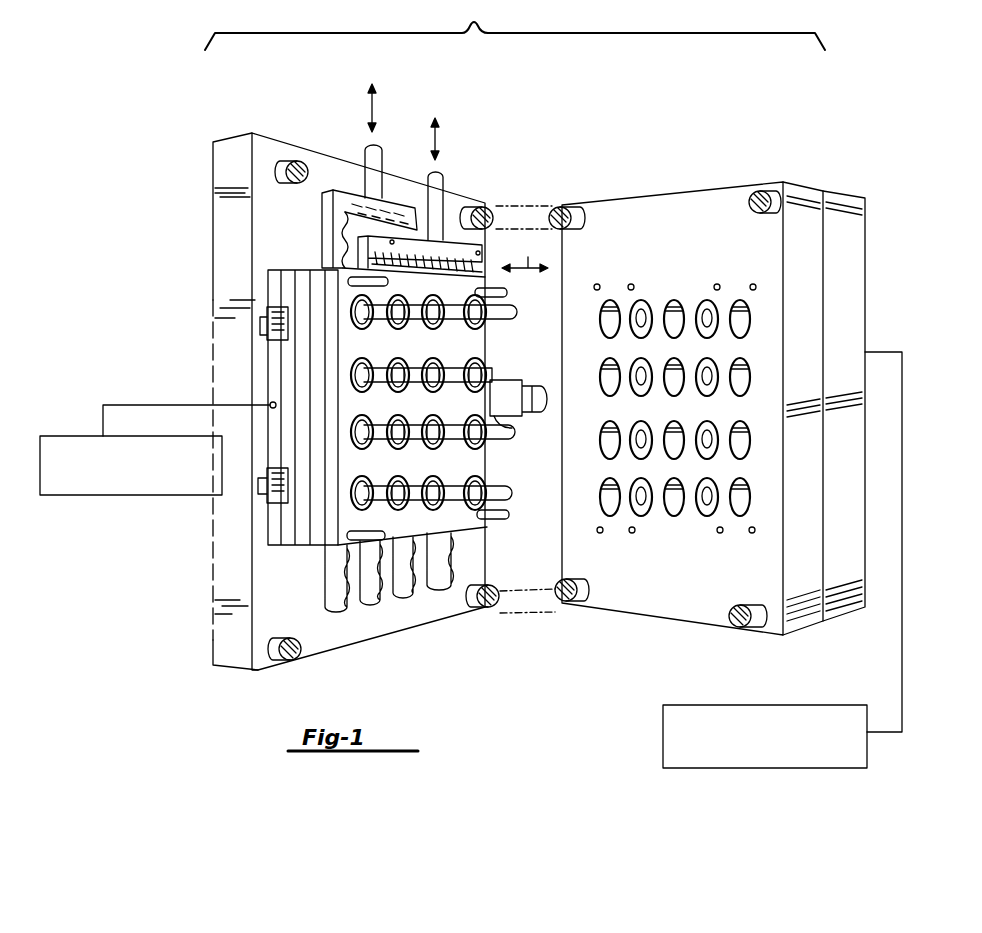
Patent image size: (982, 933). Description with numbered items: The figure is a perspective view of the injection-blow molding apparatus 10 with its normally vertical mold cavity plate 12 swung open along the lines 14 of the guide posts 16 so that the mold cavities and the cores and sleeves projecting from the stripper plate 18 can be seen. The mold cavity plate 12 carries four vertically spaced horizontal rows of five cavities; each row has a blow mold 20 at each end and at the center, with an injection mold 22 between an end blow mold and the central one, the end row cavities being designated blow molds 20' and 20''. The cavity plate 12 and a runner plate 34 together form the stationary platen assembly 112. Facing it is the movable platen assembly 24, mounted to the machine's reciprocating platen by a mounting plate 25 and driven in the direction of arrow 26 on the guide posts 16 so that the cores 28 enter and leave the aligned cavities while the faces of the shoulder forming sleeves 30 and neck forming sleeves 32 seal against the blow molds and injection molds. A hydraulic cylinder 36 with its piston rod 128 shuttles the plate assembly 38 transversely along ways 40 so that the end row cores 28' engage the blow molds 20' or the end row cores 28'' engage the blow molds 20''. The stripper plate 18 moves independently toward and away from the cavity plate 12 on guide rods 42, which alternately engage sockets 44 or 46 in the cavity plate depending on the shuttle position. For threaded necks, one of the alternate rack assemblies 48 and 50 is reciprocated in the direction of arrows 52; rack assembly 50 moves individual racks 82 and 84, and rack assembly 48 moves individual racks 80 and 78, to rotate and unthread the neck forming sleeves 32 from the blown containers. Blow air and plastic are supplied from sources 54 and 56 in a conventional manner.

The injection-blow molding apparatus 10 is at (476, 23).
The mold cavity plate 12 is at (682, 198).
The lines of guide posts 14 is at (528, 200).
The guide posts 16 is at (290, 161).
The stripper plate 18 is at (386, 361).
The blow mold 20 is at (669, 428).
The end row blow mold 20' is at (757, 408).
The end row blow mold 20'' is at (593, 408).
The injection mold 22 is at (650, 308).
The movable platen assembly 24 is at (420, 625).
The mounting plate 25 is at (225, 655).
The arrow 26 is at (525, 252).
The cores 28 is at (449, 411).
The end row cores 28' is at (429, 479).
The end row cores 28'' is at (537, 396).
The shoulder forming sleeves 30 is at (400, 366).
The neck forming sleeves 32 is at (398, 509).
The runner plate 34 is at (838, 194).
The hydraulic cylinder 36 is at (538, 386).
The plate assembly 38 is at (290, 548).
The ways 40 is at (260, 320).
The guide rods 42 is at (352, 280).
The sockets 44 is at (597, 284).
The sockets 46 is at (631, 284).
The rack assembly 48 is at (362, 170).
The rack assembly 50 is at (452, 198).
The arrows 52 is at (432, 140).
The blow air source 54 is at (73, 436).
The plastic source 56 is at (752, 705).
The individual rack 78 is at (412, 600).
The individual rack 80 is at (328, 614).
The individual rack 82 is at (380, 605).
The individual rack 84 is at (462, 592).
The stationary platen assembly 112 is at (803, 178).
The piston rod 128 is at (502, 420).